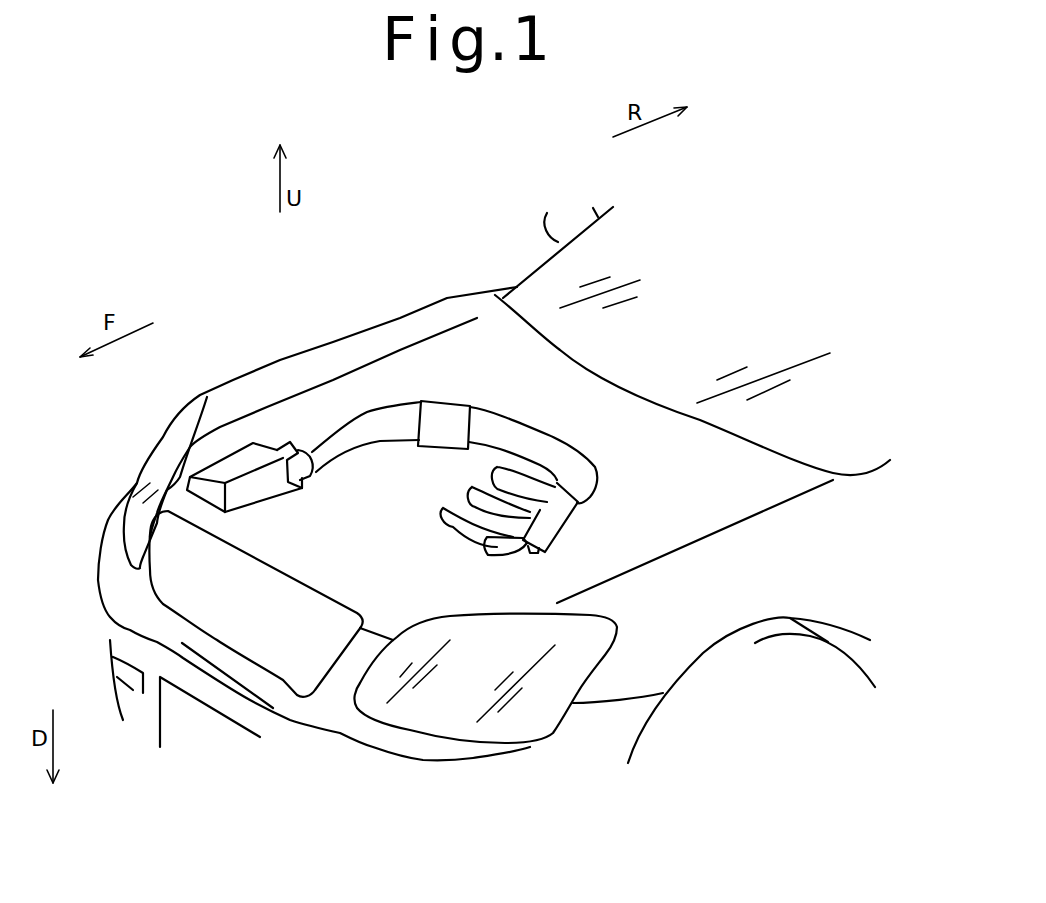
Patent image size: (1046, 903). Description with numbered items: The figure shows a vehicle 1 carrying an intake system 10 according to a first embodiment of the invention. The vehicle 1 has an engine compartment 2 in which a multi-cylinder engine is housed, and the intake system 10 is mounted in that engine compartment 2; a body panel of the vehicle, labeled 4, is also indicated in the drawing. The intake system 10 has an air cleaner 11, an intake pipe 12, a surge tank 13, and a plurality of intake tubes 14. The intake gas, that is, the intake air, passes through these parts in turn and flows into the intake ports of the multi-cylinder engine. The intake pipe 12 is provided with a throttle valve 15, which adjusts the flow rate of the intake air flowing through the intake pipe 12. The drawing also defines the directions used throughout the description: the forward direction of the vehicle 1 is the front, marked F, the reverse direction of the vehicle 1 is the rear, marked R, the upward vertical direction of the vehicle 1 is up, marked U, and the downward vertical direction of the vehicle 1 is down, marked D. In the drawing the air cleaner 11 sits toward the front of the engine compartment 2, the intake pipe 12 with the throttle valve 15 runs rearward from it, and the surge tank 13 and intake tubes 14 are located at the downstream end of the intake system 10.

The vehicle 1 is at (447, 298).
The engine compartment 2 is at (320, 400).
The front fender 4 is at (780, 483).
The intake system 10 is at (598, 450).
The air cleaner 11 is at (247, 443).
The intake pipe 12 is at (533, 420).
The surge tank 13 is at (553, 517).
The intake tubes 14 is at (460, 517).
The throttle valve 15 is at (453, 402).